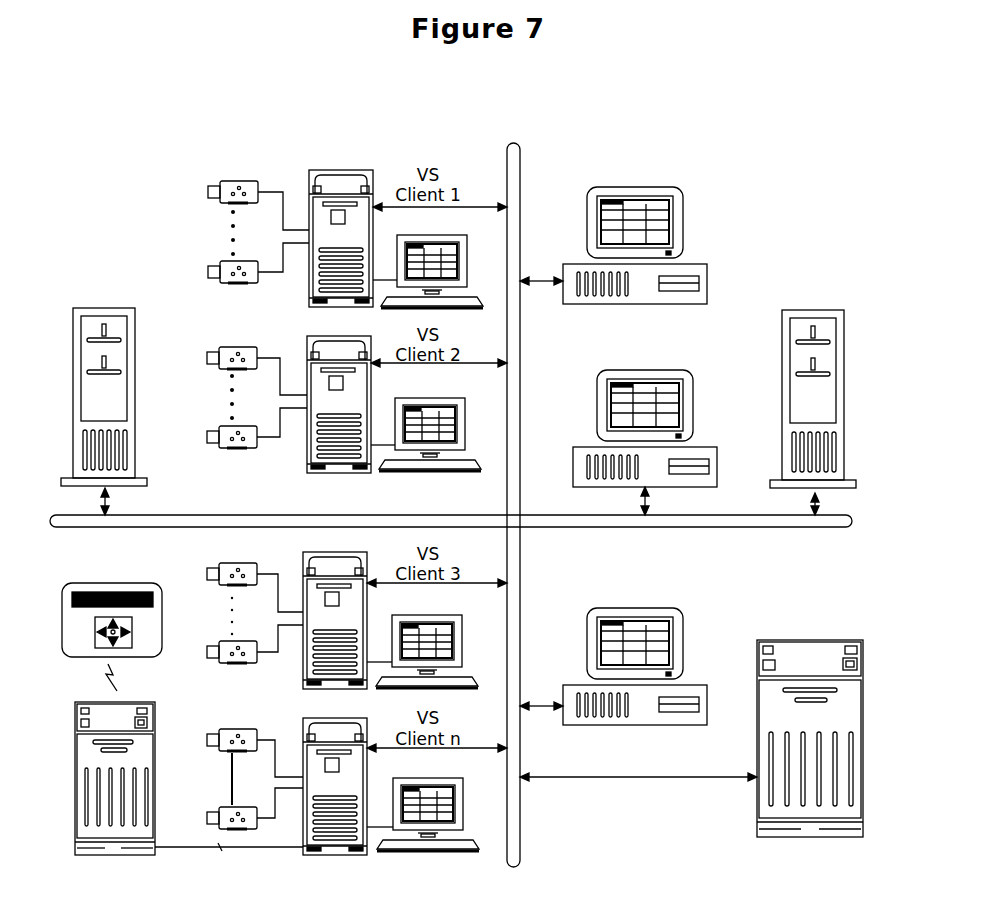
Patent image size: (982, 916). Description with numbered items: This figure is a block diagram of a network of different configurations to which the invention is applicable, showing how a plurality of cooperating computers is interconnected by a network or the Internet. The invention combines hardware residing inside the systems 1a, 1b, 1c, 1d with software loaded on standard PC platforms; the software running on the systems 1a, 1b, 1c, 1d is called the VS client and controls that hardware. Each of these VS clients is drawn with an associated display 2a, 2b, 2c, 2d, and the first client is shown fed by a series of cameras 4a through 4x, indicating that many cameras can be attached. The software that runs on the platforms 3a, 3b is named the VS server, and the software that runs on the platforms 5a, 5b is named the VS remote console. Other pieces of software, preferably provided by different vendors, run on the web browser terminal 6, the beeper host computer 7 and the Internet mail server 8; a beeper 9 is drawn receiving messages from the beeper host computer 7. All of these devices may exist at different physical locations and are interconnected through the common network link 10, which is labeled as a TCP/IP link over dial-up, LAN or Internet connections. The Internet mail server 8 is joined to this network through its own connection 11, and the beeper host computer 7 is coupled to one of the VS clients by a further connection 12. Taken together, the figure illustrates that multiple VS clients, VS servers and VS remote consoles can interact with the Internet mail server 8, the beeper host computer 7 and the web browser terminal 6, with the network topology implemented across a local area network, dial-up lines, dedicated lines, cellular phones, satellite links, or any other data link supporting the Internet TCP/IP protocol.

The VS client system 1a is at (328, 164).
The VS client system 1b is at (320, 333).
The VS client system 1c is at (318, 550).
The VS client system 1d is at (312, 717).
The client display monitor 1 2a is at (424, 233).
The client display monitor 2 2b is at (426, 395).
The client display monitor 3 2c is at (429, 612).
The client display monitor n 2d is at (434, 779).
The VS server 3a is at (64, 342).
The VS server 3b is at (780, 398).
The video camera a 4a is at (206, 188).
The video camera x 4x is at (206, 268).
The VS remote console 5a is at (712, 259).
The VS remote console 5b is at (714, 444).
The web browser terminal 6 is at (694, 682).
The beeper host computer 7 is at (74, 701).
The Internet mail server 8 is at (744, 826).
The beeper 9 is at (56, 624).
The TCP/IP network link bus 10 is at (527, 534).
The link to internet mail server 11 is at (622, 783).
The link between beeper host computer and VS client 12 is at (190, 853).